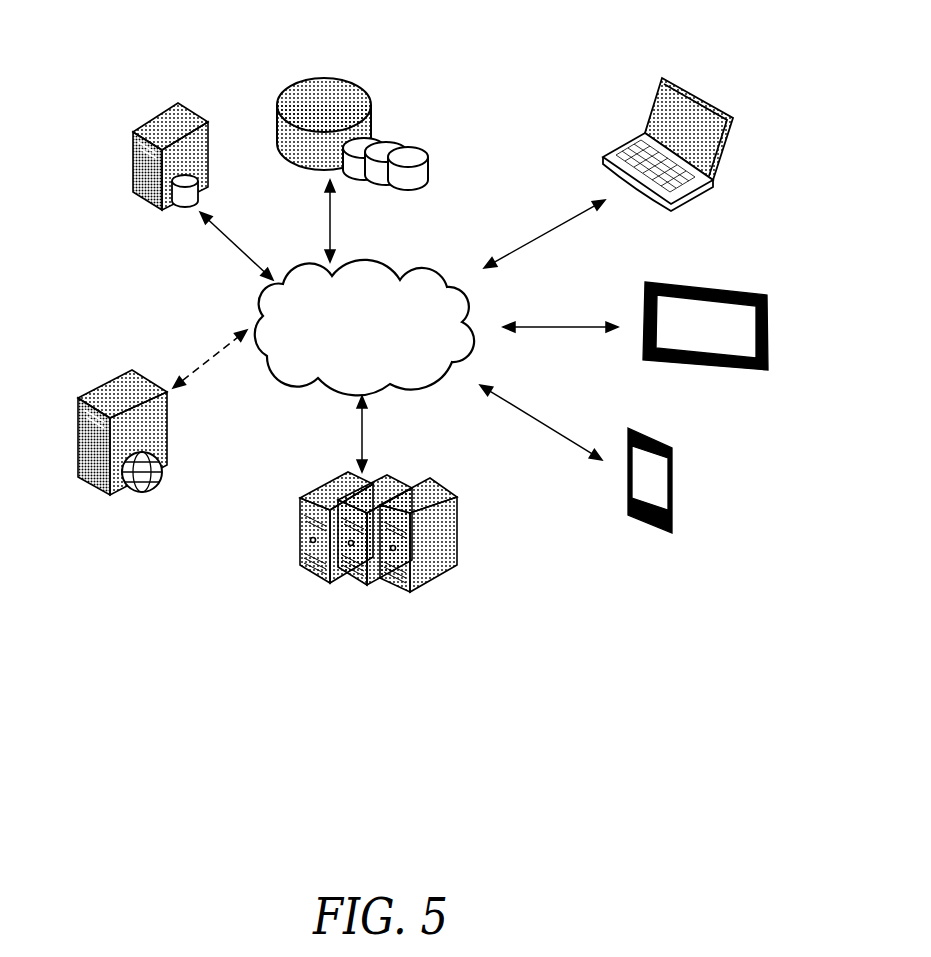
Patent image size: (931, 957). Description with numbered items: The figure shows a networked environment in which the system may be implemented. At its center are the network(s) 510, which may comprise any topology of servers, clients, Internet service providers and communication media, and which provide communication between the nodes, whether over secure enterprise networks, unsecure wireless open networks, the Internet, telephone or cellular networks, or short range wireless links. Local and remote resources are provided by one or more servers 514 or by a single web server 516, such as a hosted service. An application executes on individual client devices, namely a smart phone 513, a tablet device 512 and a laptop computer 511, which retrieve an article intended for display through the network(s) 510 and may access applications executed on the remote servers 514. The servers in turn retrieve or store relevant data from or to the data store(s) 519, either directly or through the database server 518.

The network(s) 510 is at (372, 243).
The laptop computer 511 is at (709, 72).
The tablet device 512 is at (745, 261).
The smart phone 513 is at (684, 440).
The servers 514 is at (324, 469).
The web server 516 is at (94, 374).
The database server 518 is at (168, 227).
The data store(s) 519 is at (344, 47).